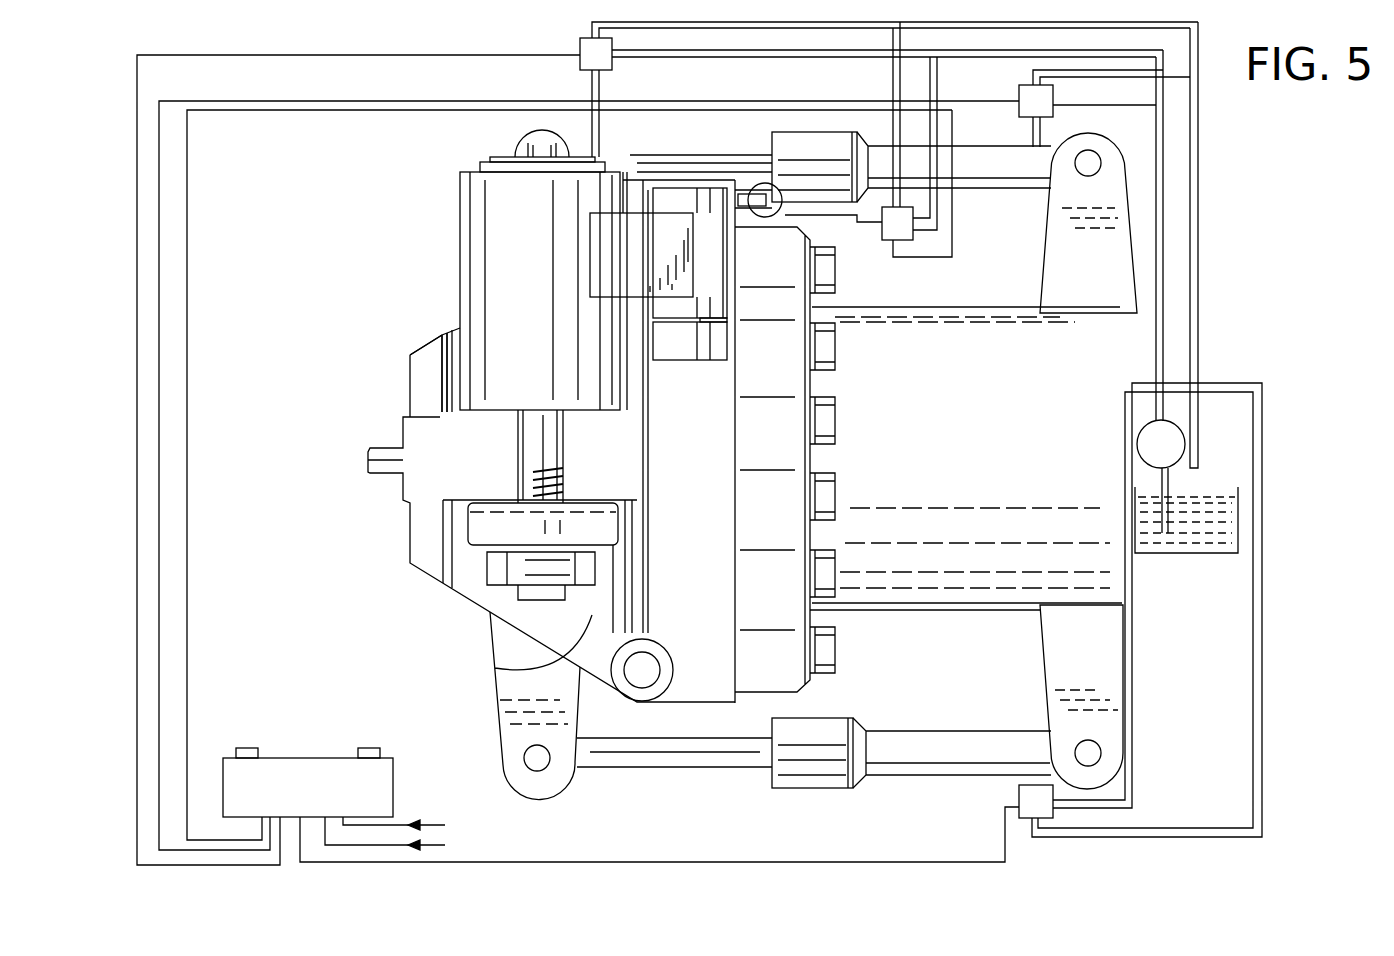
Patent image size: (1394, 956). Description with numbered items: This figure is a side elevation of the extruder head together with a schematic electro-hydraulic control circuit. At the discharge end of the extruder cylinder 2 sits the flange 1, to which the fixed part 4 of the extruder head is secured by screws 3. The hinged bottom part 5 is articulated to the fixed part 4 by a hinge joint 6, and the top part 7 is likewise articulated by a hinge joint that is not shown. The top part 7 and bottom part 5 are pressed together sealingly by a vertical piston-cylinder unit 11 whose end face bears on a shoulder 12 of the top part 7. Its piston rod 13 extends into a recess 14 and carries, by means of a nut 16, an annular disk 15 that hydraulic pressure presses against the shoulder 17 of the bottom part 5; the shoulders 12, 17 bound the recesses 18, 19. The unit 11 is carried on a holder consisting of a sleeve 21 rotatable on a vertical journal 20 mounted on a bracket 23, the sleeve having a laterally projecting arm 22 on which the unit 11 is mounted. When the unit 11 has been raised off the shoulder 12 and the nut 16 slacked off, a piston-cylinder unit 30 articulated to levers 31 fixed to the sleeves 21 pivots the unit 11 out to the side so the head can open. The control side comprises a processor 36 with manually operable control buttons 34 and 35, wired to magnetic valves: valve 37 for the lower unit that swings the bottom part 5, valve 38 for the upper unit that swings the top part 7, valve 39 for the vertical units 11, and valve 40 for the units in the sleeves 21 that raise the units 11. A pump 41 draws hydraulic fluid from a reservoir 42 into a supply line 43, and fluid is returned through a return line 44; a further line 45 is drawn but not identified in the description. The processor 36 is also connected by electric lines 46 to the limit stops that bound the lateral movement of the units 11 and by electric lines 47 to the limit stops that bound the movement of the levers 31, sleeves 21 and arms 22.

The flange 1 is at (778, 665).
The extruder cylinder 2 is at (965, 585).
The screws 3 is at (833, 587).
The fixed part 4 is at (708, 690).
The bottom part 5 is at (417, 542).
The hinge joint 6 is at (640, 675).
The top part 7 is at (422, 430).
The vertical piston-cylinder unit 11 is at (472, 224).
The shoulder 12 is at (440, 402).
The piston rod 13 is at (530, 440).
The recess 14 is at (535, 484).
The annular disk 15 is at (480, 535).
The nut 16 is at (525, 568).
The shoulder 17 is at (462, 555).
The recess 18 is at (456, 330).
The recess 19 is at (497, 667).
The journal 20 is at (732, 320).
The sleeve 21 is at (685, 195).
The arm 22 is at (632, 228).
The bracket 23 is at (735, 345).
The piston-cylinder unit 30 is at (762, 192).
The lever 31 is at (740, 192).
The control button 34 is at (247, 748).
The control button 35 is at (369, 748).
The processor 36 is at (326, 803).
The magnetic valve 37 is at (781, 622).
The magnetic valve 38 is at (1104, 108).
The magnetic valve 39 is at (889, 89).
The magnetic valve 40 is at (909, 131).
The pump 41 is at (1161, 476).
The reservoir 42 is at (1215, 530).
The supply line 43 is at (1155, 368).
The return line 44 is at (1200, 370).
The control line 45 is at (190, 452).
The electric lines 46 is at (405, 839).
The electric lines 47 is at (414, 826).